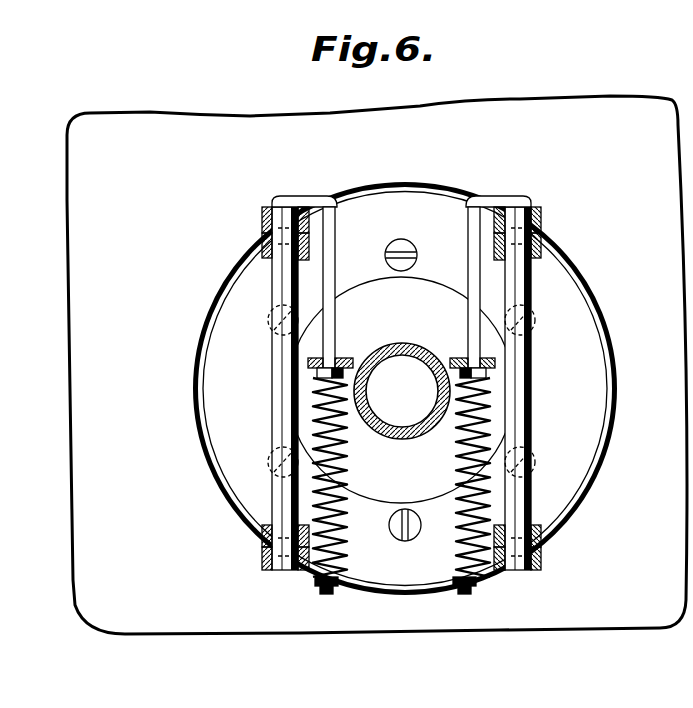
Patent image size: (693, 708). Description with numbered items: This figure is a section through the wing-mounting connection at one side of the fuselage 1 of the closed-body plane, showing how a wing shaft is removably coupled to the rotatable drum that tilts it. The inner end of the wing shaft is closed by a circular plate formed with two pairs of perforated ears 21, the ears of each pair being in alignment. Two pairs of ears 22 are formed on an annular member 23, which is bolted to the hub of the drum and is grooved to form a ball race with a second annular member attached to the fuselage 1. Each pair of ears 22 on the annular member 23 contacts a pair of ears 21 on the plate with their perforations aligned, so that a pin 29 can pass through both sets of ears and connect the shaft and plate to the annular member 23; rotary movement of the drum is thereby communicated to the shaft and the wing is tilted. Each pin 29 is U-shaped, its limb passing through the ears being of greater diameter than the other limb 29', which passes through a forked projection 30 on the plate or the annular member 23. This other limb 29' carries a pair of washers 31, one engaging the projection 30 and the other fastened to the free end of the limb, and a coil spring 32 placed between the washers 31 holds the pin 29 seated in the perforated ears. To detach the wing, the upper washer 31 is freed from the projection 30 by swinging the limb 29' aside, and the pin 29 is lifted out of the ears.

The fuselage 1 is at (80, 295).
The perforated ears 21 is at (260, 240).
The ears 22 is at (262, 210).
The annular member 23 is at (214, 324).
The pin 29 is at (391, 388).
The other limb of the pin 29' is at (401, 282).
The forked projection 30 is at (345, 358).
The washers 31 is at (334, 591).
The coil spring 32 is at (335, 488).